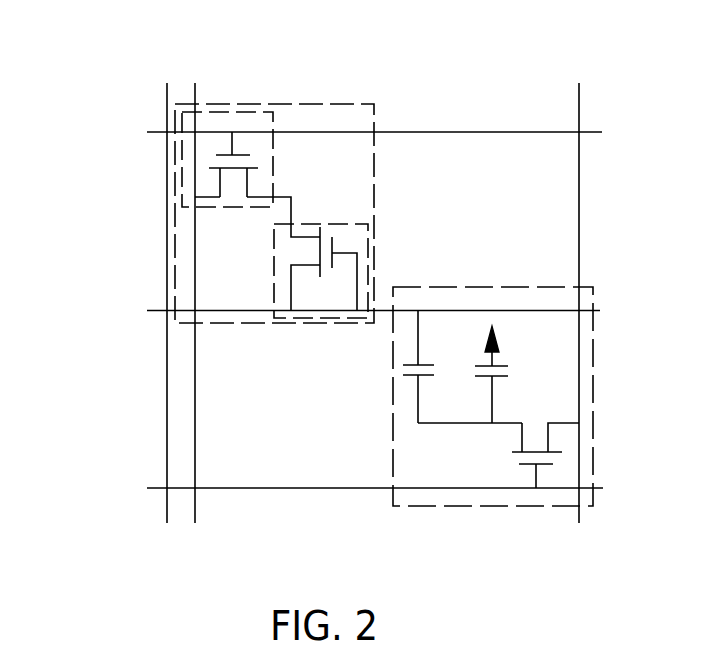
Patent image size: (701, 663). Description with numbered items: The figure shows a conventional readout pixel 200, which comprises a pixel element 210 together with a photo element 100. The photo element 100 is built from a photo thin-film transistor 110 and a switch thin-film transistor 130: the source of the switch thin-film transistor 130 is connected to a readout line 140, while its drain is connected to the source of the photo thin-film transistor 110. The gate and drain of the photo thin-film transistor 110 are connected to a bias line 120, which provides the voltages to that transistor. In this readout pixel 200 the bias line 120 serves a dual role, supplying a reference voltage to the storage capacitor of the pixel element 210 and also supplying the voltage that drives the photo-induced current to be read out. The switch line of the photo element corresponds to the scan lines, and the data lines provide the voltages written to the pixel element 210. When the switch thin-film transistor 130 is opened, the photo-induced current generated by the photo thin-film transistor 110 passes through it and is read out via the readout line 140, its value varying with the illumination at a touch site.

The readout pixel 200 is at (108, 83).
The photo element 100 is at (290, 104).
The photo thin-film transistor 110 is at (338, 223).
The switch thin-film transistor 130 is at (222, 112).
The bias line 120 is at (598, 310).
The pixel element 210 is at (593, 413).
The readout line 140 is at (198, 503).